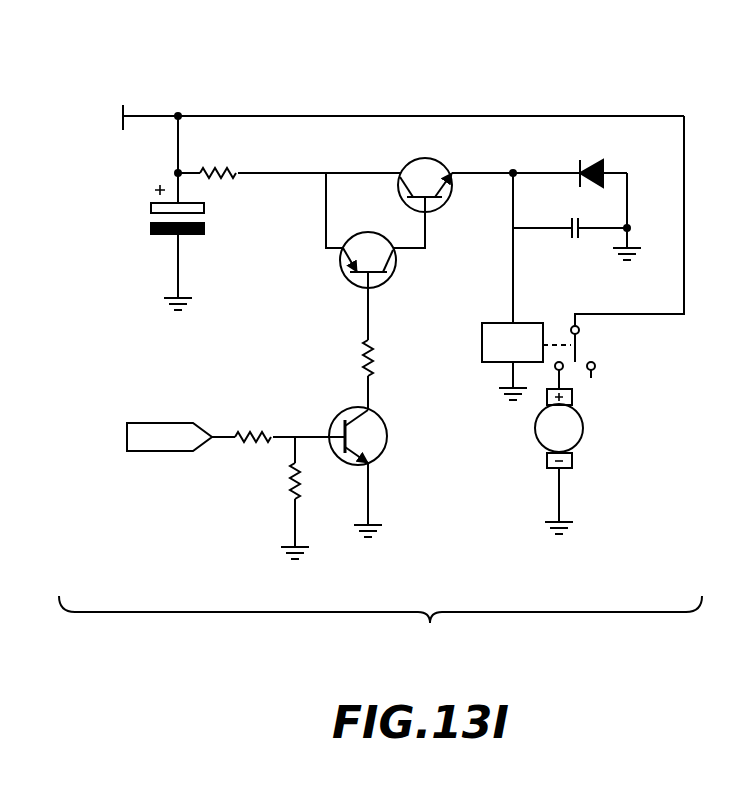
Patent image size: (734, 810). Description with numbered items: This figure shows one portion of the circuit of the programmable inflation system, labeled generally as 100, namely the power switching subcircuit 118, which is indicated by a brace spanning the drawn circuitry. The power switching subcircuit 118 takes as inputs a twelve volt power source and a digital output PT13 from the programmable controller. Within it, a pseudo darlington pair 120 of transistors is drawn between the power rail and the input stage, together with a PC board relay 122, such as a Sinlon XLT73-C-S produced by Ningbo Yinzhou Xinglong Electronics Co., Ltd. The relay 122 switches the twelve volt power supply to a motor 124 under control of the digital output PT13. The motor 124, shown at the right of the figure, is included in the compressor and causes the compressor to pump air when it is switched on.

The circuit system 100 is at (556, 81).
The power switching subcircuit 118 is at (380, 624).
The pseudo darlington pair 120 is at (357, 318).
The PC board relay 122 is at (492, 323).
The motor 124 is at (583, 432).